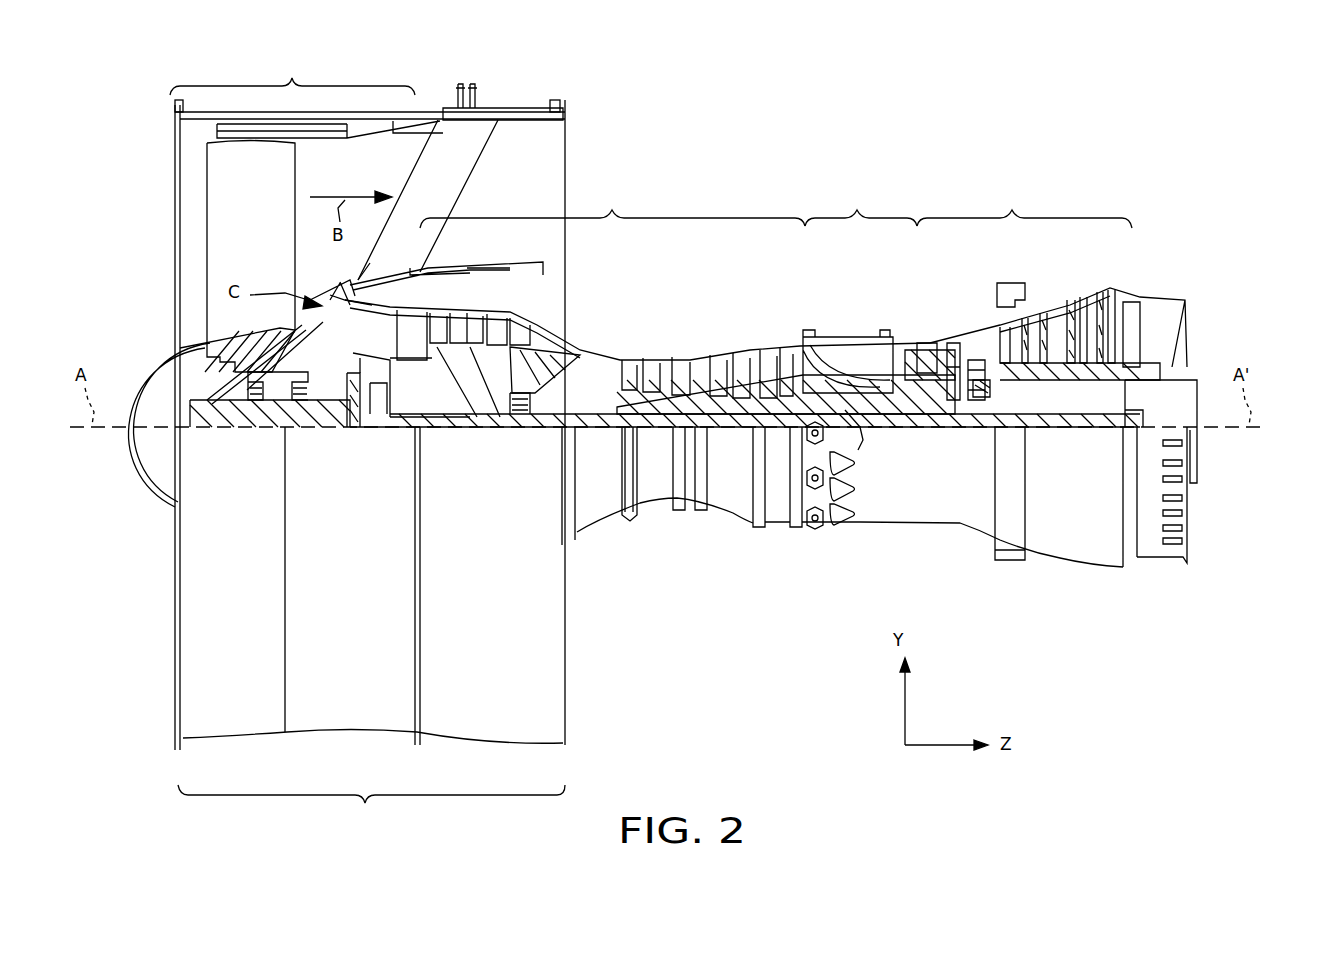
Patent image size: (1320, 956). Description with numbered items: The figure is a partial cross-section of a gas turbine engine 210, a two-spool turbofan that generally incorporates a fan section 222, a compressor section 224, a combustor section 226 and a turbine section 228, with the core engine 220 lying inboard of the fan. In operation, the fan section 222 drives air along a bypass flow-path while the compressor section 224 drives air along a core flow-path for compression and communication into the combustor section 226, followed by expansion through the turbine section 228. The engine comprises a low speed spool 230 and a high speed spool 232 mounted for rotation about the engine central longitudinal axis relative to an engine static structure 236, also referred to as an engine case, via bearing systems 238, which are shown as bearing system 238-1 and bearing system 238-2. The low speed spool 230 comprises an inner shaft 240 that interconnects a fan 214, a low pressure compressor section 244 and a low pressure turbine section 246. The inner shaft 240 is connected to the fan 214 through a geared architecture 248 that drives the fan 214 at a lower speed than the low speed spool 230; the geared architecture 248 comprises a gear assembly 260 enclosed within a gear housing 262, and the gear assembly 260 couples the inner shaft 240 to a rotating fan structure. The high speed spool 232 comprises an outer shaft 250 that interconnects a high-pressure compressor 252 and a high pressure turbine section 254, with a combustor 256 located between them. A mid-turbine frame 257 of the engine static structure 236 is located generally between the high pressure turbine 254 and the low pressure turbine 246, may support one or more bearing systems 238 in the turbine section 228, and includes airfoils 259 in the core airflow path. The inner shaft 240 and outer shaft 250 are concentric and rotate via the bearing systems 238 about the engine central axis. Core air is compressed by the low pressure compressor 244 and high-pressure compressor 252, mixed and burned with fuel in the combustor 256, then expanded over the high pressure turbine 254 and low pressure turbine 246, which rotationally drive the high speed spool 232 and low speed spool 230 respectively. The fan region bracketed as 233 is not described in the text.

The gas turbine engine 210 is at (1215, 139).
The fan 214 is at (251, 243).
The core engine 220 is at (746, 195).
The fan section 222 is at (292, 71).
The compressor section 224 is at (612, 205).
The combustor section 226 is at (861, 204).
The turbine section 228 is at (1024, 205).
The low speed spool 230 is at (738, 448).
The high speed spool 232 is at (773, 397).
The fan housing 233 is at (371, 631).
The engine static structure 236 is at (155, 770).
The bearing system 238 is at (968, 420).
The bearing system 238-1 is at (260, 408).
The bearing system 238-2 is at (517, 410).
The inner shaft 240 is at (583, 427).
The low pressure compressor section 244 is at (497, 322).
The low pressure turbine section 246 is at (1060, 310).
The geared architecture 248 is at (380, 445).
The outer shaft 250 is at (851, 413).
The high-pressure compressor 252 is at (708, 380).
The high pressure turbine section 254 is at (927, 348).
The combustor 256 is at (850, 367).
The mid-turbine frame 257 is at (973, 357).
The airfoils 259 is at (972, 357).
The gear assembly 260 is at (382, 407).
The gear housing 262 is at (372, 375).